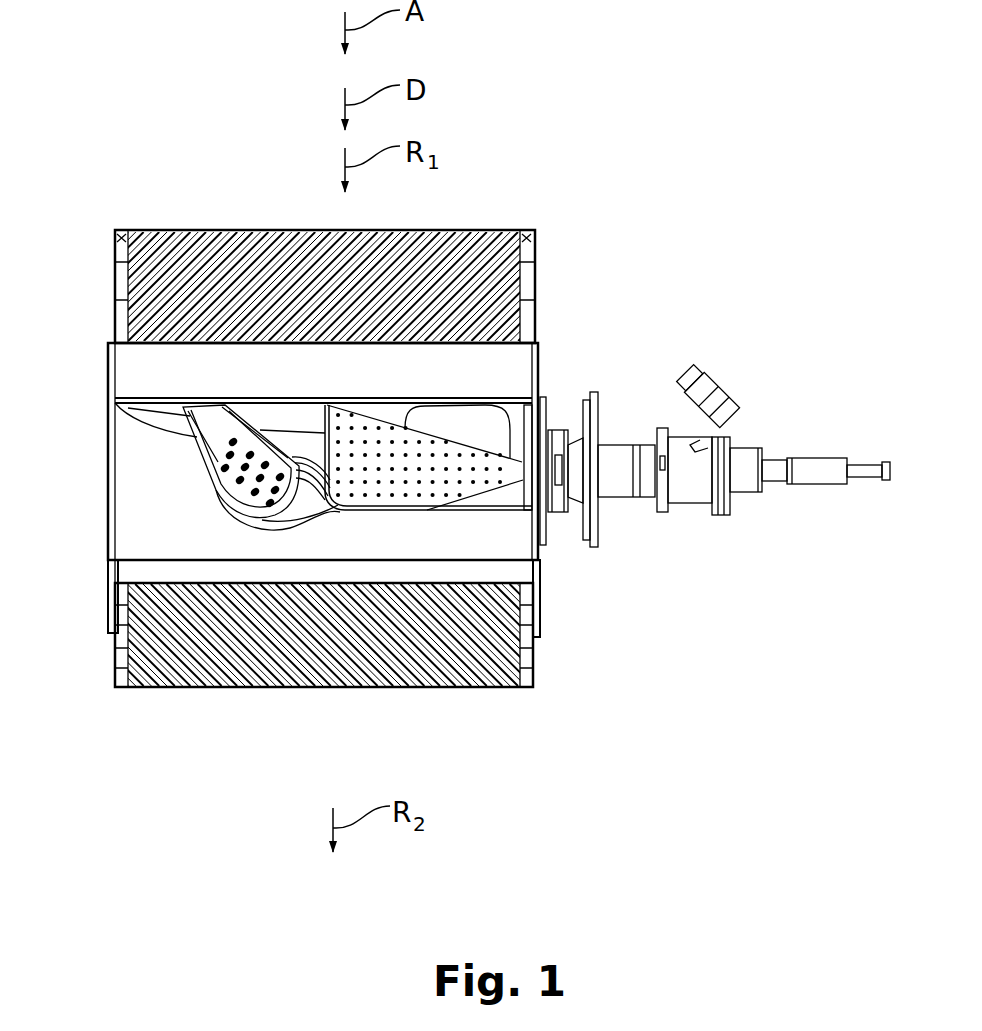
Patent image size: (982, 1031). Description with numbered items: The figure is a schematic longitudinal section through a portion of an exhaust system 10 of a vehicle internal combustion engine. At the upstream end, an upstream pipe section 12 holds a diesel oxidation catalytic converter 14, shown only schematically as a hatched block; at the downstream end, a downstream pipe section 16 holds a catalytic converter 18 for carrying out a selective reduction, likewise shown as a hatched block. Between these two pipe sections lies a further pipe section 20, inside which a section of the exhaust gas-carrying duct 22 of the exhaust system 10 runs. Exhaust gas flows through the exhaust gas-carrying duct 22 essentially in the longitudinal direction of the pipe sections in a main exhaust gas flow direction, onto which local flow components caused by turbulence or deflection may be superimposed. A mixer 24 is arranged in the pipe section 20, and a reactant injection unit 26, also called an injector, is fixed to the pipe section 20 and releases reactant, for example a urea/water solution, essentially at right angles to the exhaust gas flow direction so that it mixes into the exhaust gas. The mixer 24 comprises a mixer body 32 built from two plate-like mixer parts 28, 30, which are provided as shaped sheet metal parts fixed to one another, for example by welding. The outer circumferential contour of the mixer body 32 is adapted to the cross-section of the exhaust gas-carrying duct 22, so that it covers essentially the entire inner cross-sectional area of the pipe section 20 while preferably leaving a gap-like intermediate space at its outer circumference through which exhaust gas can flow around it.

The exhaust system 10 is at (568, 136).
The upstream pipe section 12 is at (537, 250).
The diesel oxidation catalytic converter 14 is at (178, 230).
The downstream pipe section 16 is at (540, 672).
The catalytic converter 18 is at (398, 663).
The pipe section 20 is at (538, 372).
The exhaust gas-carrying duct 22 is at (516, 548).
The mixer 24 is at (489, 522).
The reactant injection unit 26 is at (750, 445).
The plate-like mixer part 28 is at (470, 397).
The plate-like mixer part 30 is at (514, 517).
The mixer body 32 is at (186, 396).